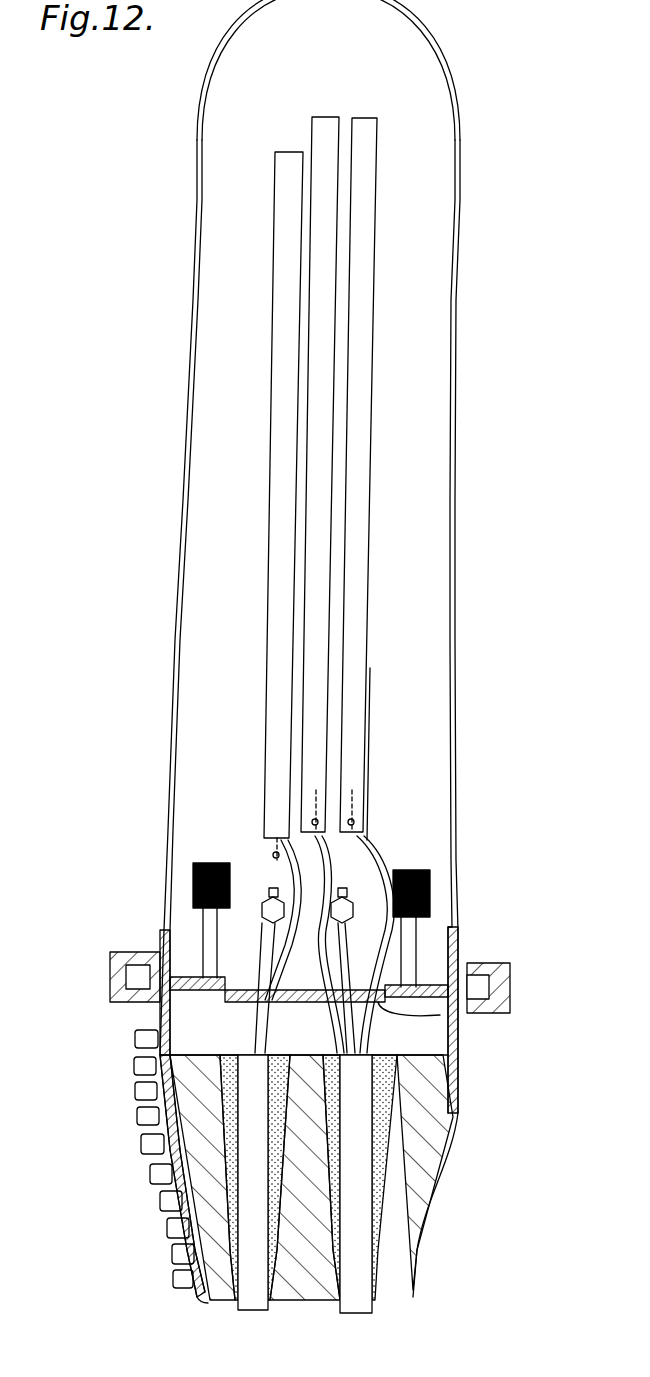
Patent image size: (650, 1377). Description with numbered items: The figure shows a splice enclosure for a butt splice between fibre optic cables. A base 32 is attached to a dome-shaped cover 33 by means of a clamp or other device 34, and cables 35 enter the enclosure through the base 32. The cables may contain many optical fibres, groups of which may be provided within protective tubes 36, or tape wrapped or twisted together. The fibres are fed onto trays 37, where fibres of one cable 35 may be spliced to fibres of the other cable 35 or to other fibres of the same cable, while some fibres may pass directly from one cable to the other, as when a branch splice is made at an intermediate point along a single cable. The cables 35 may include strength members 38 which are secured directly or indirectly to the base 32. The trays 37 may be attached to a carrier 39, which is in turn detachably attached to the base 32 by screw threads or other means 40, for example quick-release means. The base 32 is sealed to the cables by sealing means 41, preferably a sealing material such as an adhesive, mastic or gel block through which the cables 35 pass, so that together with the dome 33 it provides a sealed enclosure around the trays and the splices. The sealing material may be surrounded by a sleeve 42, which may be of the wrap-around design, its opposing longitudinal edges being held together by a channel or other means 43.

The base 32 is at (160, 1015).
The dome-shaped cover 33 is at (177, 630).
The clamp 34 is at (110, 967).
The cables 35 is at (237, 1310).
The protective tubes 36 is at (275, 880).
The trays 37 is at (288, 390).
The strength members 38 is at (260, 935).
The carrier 39 is at (385, 1012).
The screw threads 40 is at (193, 873).
The sealing means 41 is at (197, 1153).
The sleeve 42 is at (173, 1197).
The channel 43 is at (182, 1250).